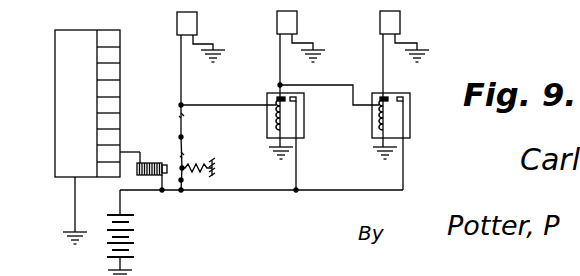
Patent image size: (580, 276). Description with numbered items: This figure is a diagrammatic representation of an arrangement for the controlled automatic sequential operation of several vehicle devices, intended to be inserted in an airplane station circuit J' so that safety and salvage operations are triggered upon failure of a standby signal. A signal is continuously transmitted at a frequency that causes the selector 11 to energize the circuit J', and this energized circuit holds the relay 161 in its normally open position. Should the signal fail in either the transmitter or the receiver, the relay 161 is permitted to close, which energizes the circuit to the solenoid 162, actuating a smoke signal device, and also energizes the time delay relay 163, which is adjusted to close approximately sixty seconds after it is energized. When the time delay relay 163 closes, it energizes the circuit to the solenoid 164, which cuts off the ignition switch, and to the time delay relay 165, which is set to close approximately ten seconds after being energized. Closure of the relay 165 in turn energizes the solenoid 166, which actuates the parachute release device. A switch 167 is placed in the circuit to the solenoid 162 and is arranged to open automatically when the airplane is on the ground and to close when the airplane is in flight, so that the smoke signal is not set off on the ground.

The selector 11 is at (57, 95).
The airplane station circuit J' is at (102, 153).
The relay 161 is at (150, 163).
The solenoid 162 is at (177, 30).
The time delay relay 163 is at (267, 133).
The solenoid 164 is at (276, 24).
The time delay relay 165 is at (372, 133).
The solenoid 166 is at (379, 24).
The switch 167 is at (179, 117).